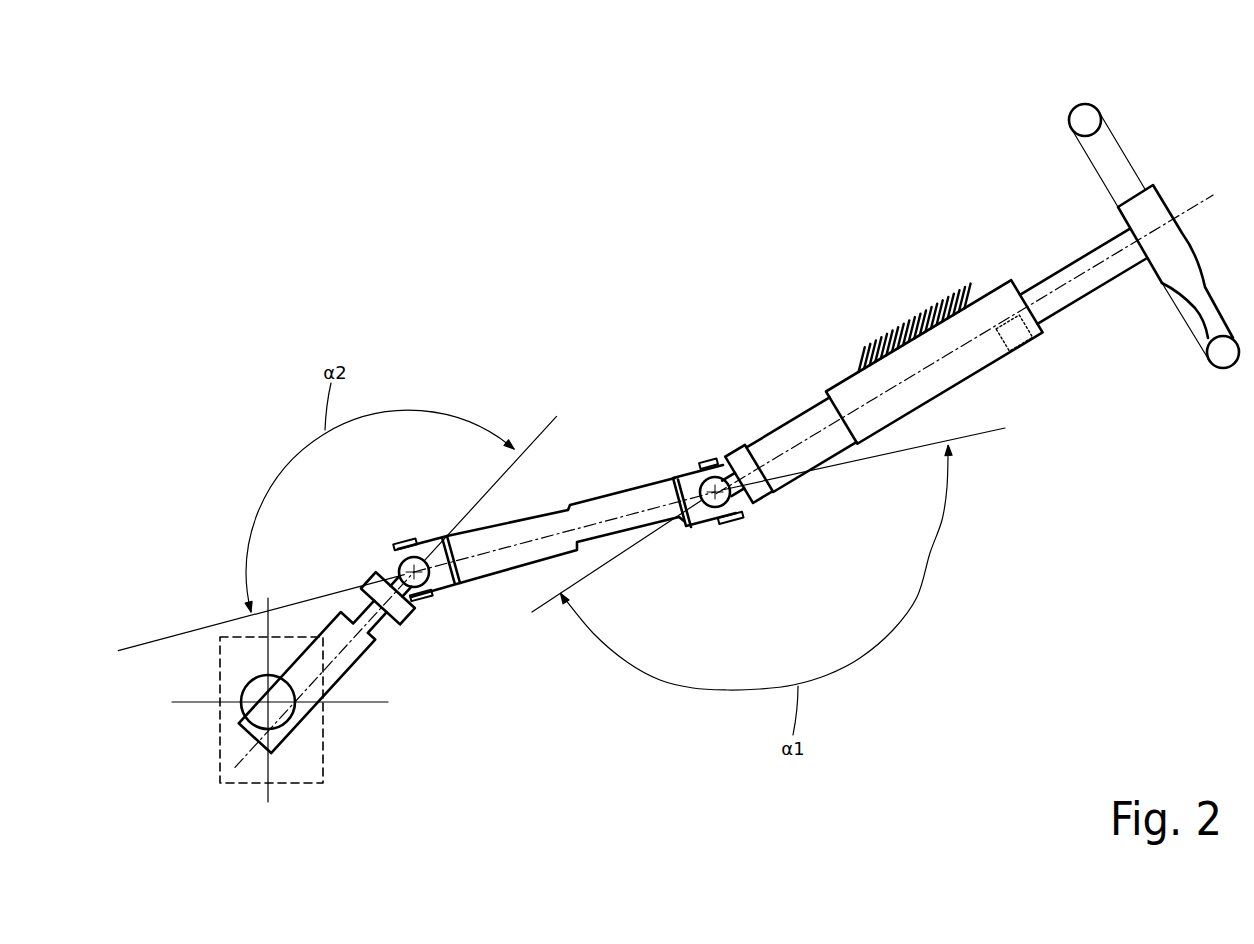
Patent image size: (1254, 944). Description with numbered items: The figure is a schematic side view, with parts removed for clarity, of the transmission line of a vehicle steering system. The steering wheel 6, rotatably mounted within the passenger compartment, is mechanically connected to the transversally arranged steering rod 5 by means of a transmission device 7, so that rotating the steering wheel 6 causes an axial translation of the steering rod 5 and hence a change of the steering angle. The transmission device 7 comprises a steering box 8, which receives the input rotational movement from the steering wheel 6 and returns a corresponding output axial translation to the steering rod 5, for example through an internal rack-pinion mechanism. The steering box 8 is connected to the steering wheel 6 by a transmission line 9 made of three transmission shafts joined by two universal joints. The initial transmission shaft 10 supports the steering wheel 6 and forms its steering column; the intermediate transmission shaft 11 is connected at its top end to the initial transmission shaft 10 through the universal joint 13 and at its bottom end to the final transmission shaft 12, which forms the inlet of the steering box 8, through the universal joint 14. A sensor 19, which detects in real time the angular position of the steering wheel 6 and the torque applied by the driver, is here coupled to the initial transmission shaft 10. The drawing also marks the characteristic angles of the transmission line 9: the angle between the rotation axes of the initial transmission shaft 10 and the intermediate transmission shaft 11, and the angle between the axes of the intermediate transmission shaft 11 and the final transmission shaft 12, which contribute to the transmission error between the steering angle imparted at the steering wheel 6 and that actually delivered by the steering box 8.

The steering rod 5 is at (255, 693).
The steering wheel 6 is at (1086, 112).
The transmission device 7 is at (247, 147).
The steering box 8 is at (338, 796).
The transmission line 9 is at (676, 218).
The initial transmission shaft 10 is at (1068, 275).
The intermediate transmission shaft 11 is at (650, 497).
The final transmission shaft 12 is at (367, 647).
The universal joint 13 is at (706, 430).
The universal joint 14 is at (437, 624).
The sensor 19 is at (1018, 342).